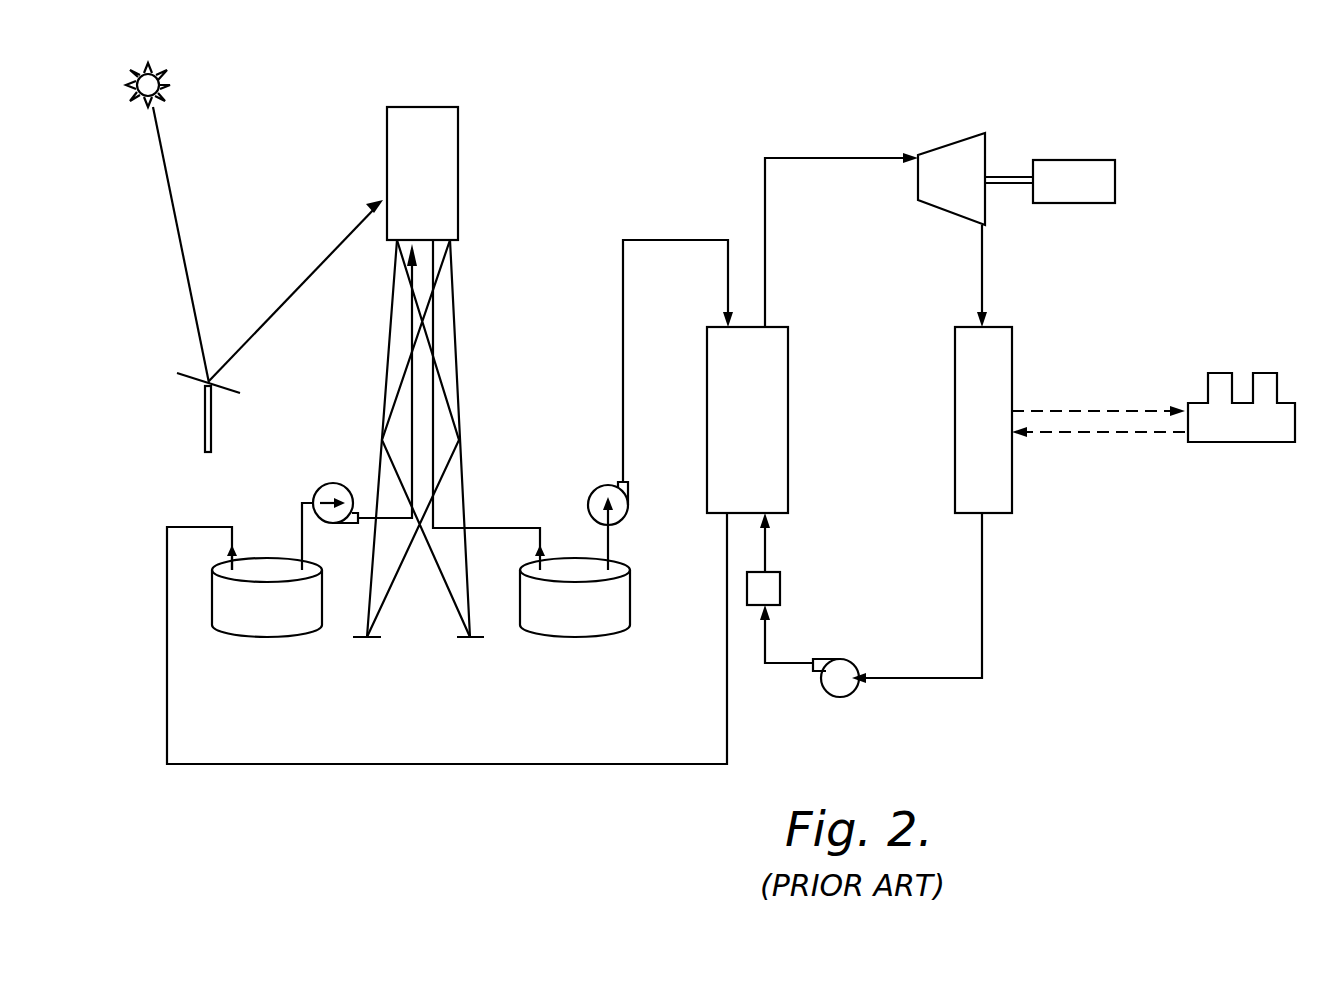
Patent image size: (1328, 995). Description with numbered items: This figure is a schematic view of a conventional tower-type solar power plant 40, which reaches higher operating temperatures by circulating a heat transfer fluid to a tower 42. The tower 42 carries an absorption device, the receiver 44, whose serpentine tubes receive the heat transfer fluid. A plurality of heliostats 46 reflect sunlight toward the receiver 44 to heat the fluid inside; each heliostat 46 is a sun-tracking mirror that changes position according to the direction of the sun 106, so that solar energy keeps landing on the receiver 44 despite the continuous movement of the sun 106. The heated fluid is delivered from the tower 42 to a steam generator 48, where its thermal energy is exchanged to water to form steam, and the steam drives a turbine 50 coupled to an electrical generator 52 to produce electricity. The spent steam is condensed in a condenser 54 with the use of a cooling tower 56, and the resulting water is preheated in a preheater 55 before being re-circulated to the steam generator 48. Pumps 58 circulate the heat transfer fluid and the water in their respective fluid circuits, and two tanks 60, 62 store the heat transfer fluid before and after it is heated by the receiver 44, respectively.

The tower-type solar power plant 40 is at (1194, 219).
The tower 42 is at (513, 160).
The receiver 44 is at (398, 155).
The heliostat 46 is at (229, 391).
The steam generator 48 is at (773, 447).
The turbine 50 is at (947, 153).
The electrical generator 52 is at (1105, 163).
The condenser 54 is at (1003, 363).
The preheater 55 is at (771, 583).
The cooling tower 56 is at (1230, 435).
The pump 58 is at (333, 485).
The tank 60 is at (265, 630).
The tank 62 is at (583, 630).
The sun 106 is at (168, 88).